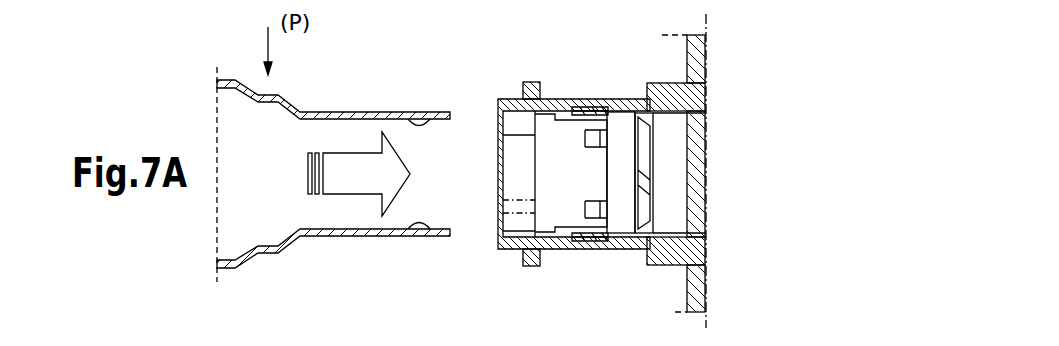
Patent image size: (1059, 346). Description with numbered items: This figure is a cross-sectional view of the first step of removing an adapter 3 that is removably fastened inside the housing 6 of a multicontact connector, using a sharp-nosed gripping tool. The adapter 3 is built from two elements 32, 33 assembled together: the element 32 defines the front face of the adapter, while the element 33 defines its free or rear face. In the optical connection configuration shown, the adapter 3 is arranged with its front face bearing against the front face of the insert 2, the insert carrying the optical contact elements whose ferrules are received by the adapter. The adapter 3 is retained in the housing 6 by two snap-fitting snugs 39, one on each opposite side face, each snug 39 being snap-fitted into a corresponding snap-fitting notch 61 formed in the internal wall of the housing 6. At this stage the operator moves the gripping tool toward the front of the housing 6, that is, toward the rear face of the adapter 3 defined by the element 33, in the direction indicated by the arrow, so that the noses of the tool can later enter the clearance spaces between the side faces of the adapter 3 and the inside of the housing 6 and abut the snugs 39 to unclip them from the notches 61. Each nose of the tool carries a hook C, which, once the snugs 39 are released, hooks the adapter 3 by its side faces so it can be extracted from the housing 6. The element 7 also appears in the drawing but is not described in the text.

The insert 2 is at (687, 202).
The adapter 3 is at (560, 140).
The housing 6 is at (513, 101).
The wall 7 is at (697, 287).
The element 32 is at (547, 200).
The element 33 is at (620, 222).
The snap-fitting snug 39 is at (582, 241).
The snap-fitting notch 61 is at (605, 108).
The hook C is at (428, 120).